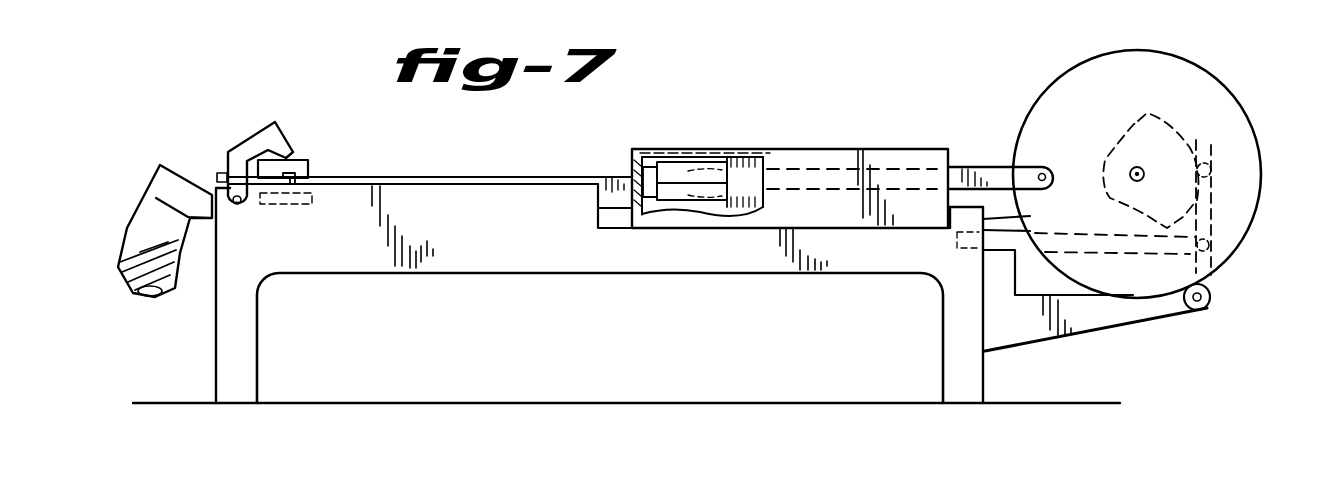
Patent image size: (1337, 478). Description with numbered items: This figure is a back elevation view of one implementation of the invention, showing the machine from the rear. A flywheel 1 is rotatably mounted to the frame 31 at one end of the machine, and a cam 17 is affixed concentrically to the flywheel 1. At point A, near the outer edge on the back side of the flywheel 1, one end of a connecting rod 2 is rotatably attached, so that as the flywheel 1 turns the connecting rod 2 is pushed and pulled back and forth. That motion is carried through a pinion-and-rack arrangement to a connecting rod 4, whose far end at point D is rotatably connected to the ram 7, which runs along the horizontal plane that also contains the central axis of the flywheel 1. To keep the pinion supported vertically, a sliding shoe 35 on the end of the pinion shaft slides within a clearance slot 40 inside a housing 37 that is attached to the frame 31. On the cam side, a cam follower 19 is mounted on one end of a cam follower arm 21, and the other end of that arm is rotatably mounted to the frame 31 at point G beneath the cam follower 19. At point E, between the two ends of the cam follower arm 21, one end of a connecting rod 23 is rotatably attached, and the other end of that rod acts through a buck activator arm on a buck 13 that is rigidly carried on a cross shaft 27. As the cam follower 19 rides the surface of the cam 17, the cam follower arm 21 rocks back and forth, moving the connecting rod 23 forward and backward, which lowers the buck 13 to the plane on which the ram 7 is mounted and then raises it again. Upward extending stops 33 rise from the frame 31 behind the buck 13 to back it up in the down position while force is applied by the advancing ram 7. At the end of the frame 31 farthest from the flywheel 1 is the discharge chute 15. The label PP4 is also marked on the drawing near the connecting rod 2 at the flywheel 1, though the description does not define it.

The flywheel 1 is at (1222, 93).
The connecting rod 2 is at (1000, 167).
The connecting rod 4 is at (590, 177).
The ram 7 is at (302, 160).
The buck 13 is at (254, 137).
The discharge chute 15 is at (140, 205).
The cam 17 is at (1138, 121).
The cam follower 19 is at (1210, 162).
The cam follower arm 21 is at (1213, 201).
The connecting rod 23 is at (1000, 240).
The cross shaft 27 is at (236, 208).
The frame 31 is at (726, 272).
The stops 33 is at (292, 186).
The sliding shoe 35 is at (676, 165).
The housing 37 is at (832, 150).
The clearance slot 40 is at (732, 160).
The point A is at (1046, 174).
The point D is at (320, 177).
The point E is at (1210, 244).
The point G is at (1207, 305).
The pivot point PP4 is at (1040, 172).